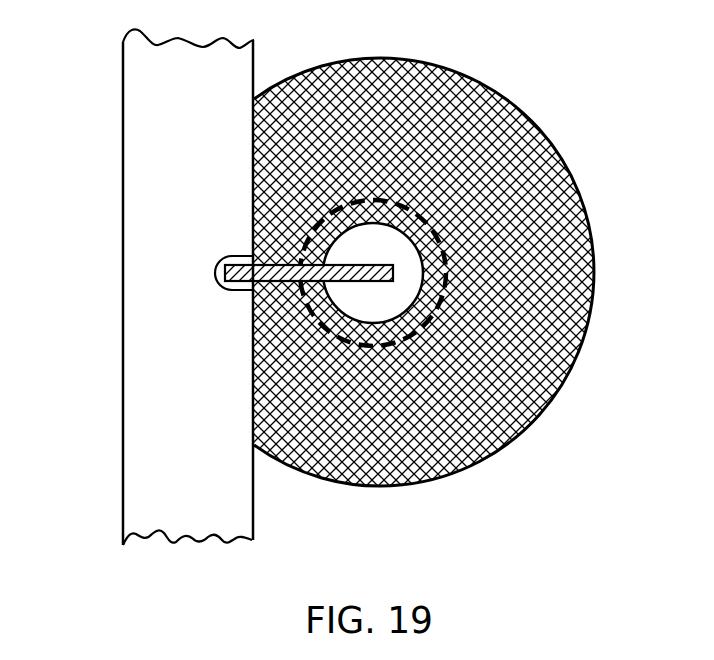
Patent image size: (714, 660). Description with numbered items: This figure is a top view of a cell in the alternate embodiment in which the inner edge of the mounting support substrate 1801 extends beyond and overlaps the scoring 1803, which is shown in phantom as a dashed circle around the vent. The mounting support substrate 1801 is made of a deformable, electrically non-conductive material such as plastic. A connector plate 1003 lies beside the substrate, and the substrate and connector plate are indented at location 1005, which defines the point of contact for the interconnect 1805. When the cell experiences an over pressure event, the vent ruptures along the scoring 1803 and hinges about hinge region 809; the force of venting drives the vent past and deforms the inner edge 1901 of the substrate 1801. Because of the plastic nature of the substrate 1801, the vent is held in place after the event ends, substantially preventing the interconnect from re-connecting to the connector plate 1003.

The mounting support substrate 1801 is at (390, 439).
The scoring 1803 is at (430, 200).
The interconnect 1805 is at (290, 297).
The inner edge 1901 is at (362, 233).
The hinge region 809 is at (464, 276).
The indented location 1005 is at (237, 243).
The connector plate 1003 is at (187, 509).